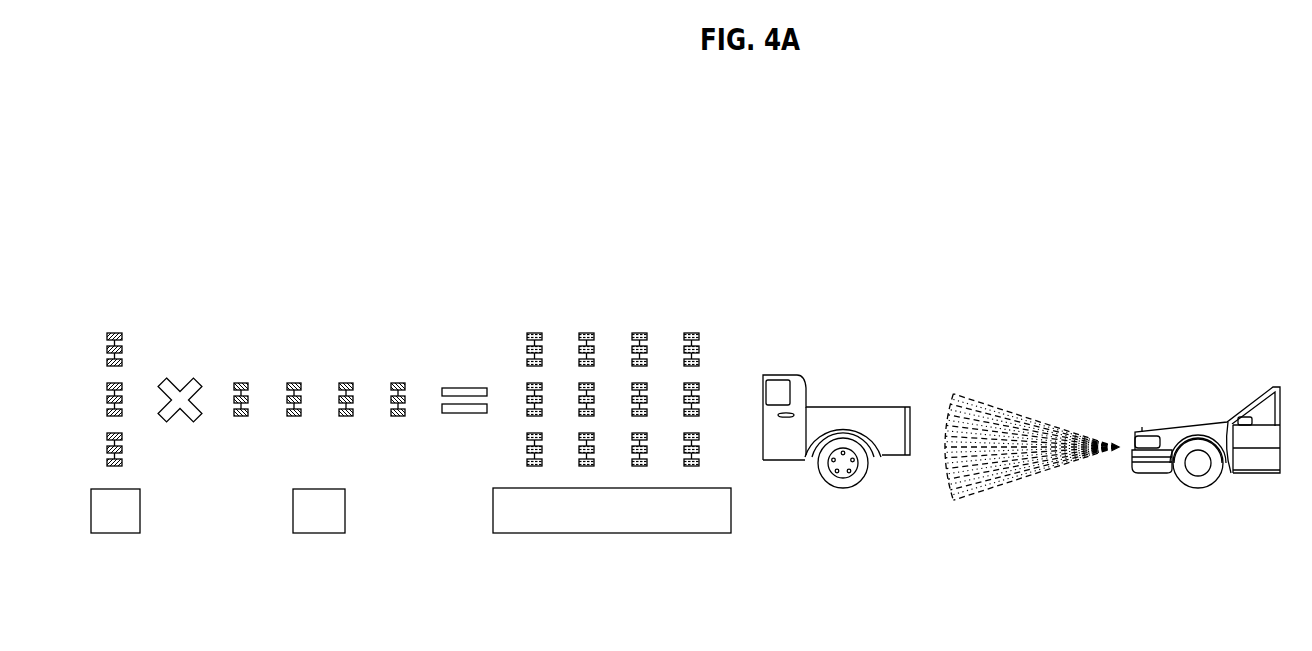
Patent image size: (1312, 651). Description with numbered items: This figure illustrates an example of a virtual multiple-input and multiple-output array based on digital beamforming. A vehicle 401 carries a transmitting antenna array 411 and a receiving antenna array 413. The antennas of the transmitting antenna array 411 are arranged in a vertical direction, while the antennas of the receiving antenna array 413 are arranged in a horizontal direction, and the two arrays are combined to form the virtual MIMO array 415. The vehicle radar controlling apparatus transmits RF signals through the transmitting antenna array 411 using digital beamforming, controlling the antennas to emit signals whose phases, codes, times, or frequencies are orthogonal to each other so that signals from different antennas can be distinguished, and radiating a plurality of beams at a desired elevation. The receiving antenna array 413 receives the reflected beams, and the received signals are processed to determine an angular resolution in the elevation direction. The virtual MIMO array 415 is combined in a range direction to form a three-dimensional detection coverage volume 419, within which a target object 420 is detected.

The transmitting antenna array 411 is at (115, 534).
The receiving antenna array 413 is at (319, 534).
The virtual MIMO array 415 is at (613, 534).
The three-dimensional detection coverage volume 419 is at (1034, 415).
The target object 420 is at (840, 489).
The vehicle 401 is at (1184, 425).